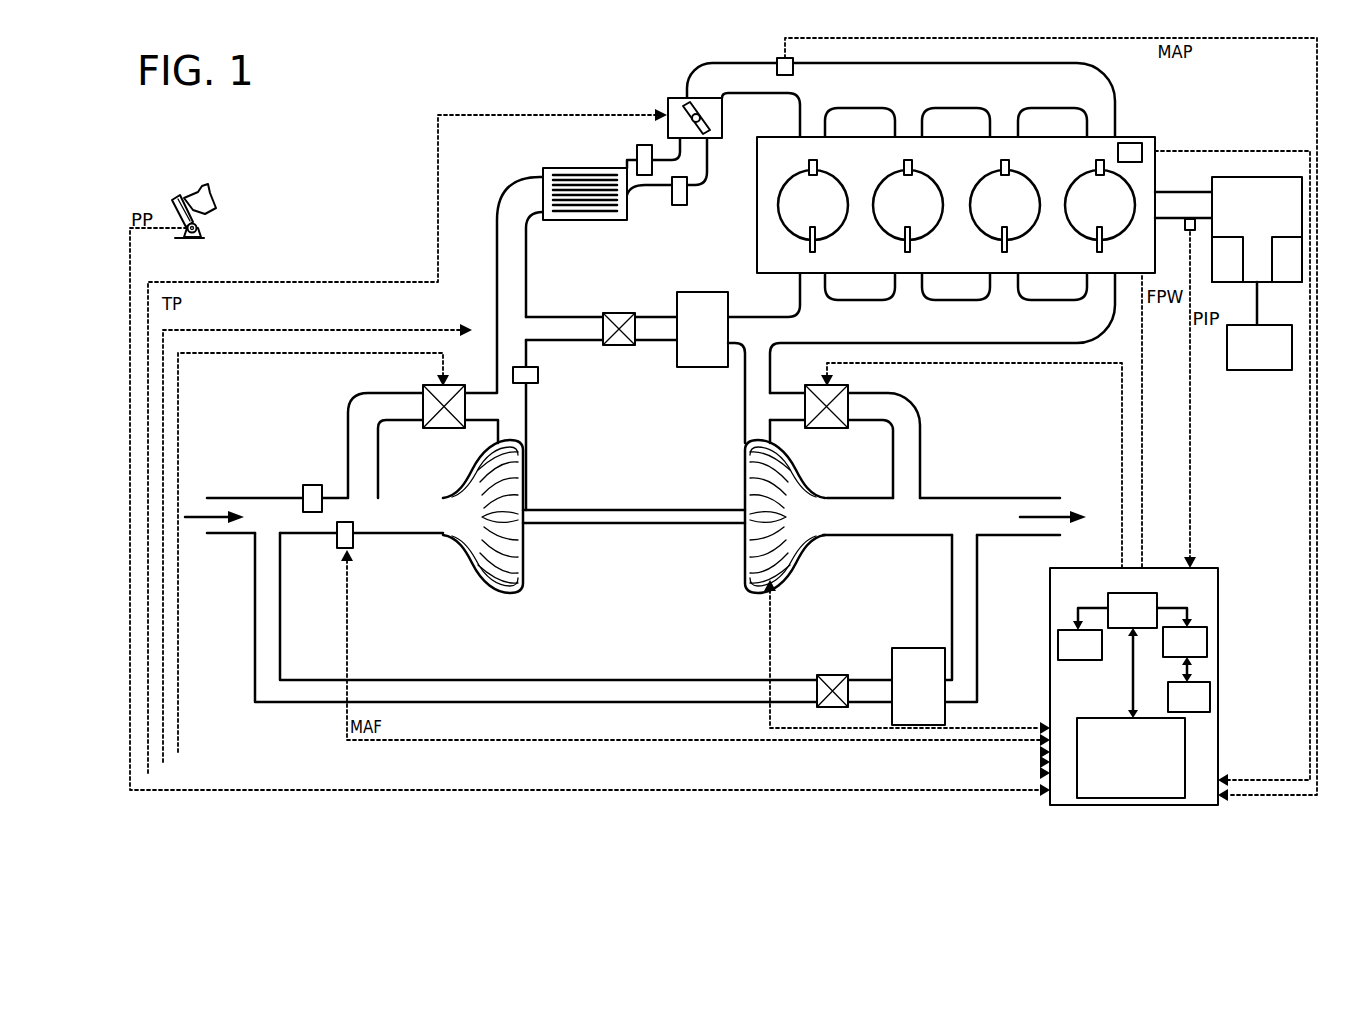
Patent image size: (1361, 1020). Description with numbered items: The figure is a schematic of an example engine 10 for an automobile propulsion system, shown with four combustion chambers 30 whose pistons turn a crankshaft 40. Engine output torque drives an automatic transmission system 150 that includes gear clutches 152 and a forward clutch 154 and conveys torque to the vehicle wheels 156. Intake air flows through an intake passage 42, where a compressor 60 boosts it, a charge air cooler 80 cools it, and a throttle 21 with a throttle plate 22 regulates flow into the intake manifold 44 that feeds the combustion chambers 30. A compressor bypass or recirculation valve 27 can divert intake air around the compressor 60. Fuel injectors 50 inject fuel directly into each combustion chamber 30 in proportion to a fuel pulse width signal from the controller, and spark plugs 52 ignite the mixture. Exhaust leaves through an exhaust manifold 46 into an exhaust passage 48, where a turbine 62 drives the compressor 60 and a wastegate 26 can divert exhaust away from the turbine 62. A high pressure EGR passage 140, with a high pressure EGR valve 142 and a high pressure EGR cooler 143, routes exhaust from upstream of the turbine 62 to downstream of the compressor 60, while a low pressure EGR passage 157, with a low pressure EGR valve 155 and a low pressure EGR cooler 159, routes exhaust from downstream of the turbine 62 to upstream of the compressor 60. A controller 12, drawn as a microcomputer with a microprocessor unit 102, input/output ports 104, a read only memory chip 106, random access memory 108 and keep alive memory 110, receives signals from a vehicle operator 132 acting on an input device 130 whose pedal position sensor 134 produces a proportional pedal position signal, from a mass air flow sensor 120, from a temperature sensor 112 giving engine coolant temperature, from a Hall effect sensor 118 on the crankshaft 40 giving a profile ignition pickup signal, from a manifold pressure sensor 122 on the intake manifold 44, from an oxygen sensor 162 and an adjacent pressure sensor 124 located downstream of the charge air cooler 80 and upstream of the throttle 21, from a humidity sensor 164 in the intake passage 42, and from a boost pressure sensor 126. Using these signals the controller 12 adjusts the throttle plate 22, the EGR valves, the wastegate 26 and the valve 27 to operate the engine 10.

The engine 10 is at (1033, 165).
The controller 12 is at (1072, 700).
The throttle 21 is at (681, 98).
The throttle plate 22 is at (708, 130).
The wastegate 26 is at (850, 392).
The compressor bypass or recirculation valve 27 is at (420, 395).
The combustion chamber 30 is at (804, 215).
The crankshaft 40 is at (1176, 192).
The intake passage 42 is at (247, 528).
The intake manifold 44 is at (825, 98).
The exhaust manifold 46 is at (947, 333).
The exhaust passage 48 is at (746, 380).
The fuel injector 50 is at (808, 248).
The spark plug 52 is at (818, 170).
The compressor 60 is at (480, 557).
The turbine 62 is at (790, 470).
The charge air cooler 80 is at (603, 168).
The microprocessor unit 102 is at (1105, 602).
The input/output ports 104 is at (1144, 794).
The read only memory chip 106 is at (1058, 655).
The random access memory 108 is at (1207, 630).
The keep alive memory 110 is at (1210, 683).
The temperature sensor 112 is at (1136, 143).
The Hall effect sensor 118 is at (1186, 231).
The MAF sensor 120 is at (355, 540).
The MAP sensor 122 is at (795, 60).
The pressure sensor 124 is at (680, 205).
The boost pressure sensor 126 is at (545, 380).
The input device 130 is at (176, 198).
The vehicle operator 132 is at (215, 197).
The pedal position sensor 134 is at (201, 230).
The high pressure EGR passage 140 is at (560, 318).
The high pressure EGR valve 142 is at (621, 313).
The high pressure EGR cooler 143 is at (690, 343).
The automatic transmission system 150 is at (1245, 217).
The gear clutches 152 is at (1214, 274).
The forward clutch 154 is at (1274, 272).
The vehicle wheels 156 is at (1246, 359).
The low pressure EGR valve 155 is at (833, 675).
The low pressure EGR passage 157 is at (548, 680).
The low pressure EGR cooler 159 is at (905, 696).
The oxygen sensor 162 is at (638, 148).
The humidity sensor 164 is at (313, 485).